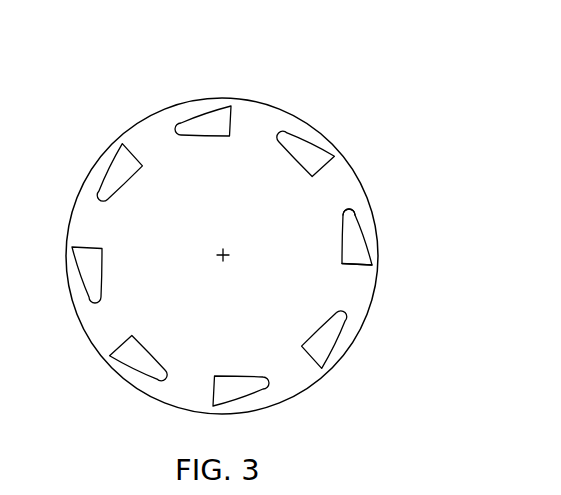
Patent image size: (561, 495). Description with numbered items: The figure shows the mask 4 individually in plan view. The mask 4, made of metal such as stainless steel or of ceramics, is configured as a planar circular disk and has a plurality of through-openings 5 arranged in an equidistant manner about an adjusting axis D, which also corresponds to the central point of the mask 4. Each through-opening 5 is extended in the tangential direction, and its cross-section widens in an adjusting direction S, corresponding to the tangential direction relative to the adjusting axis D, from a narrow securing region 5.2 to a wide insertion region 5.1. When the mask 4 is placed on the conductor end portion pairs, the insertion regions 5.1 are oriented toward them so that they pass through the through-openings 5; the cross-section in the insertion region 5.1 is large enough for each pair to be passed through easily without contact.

The mask 4 is at (306, 86).
The through-opening 5 is at (203, 114).
The insertion region 5.1 is at (371, 262).
The securing region 5.2 is at (357, 210).
The adjusting axis D is at (229, 247).
The adjusting direction S is at (326, 218).